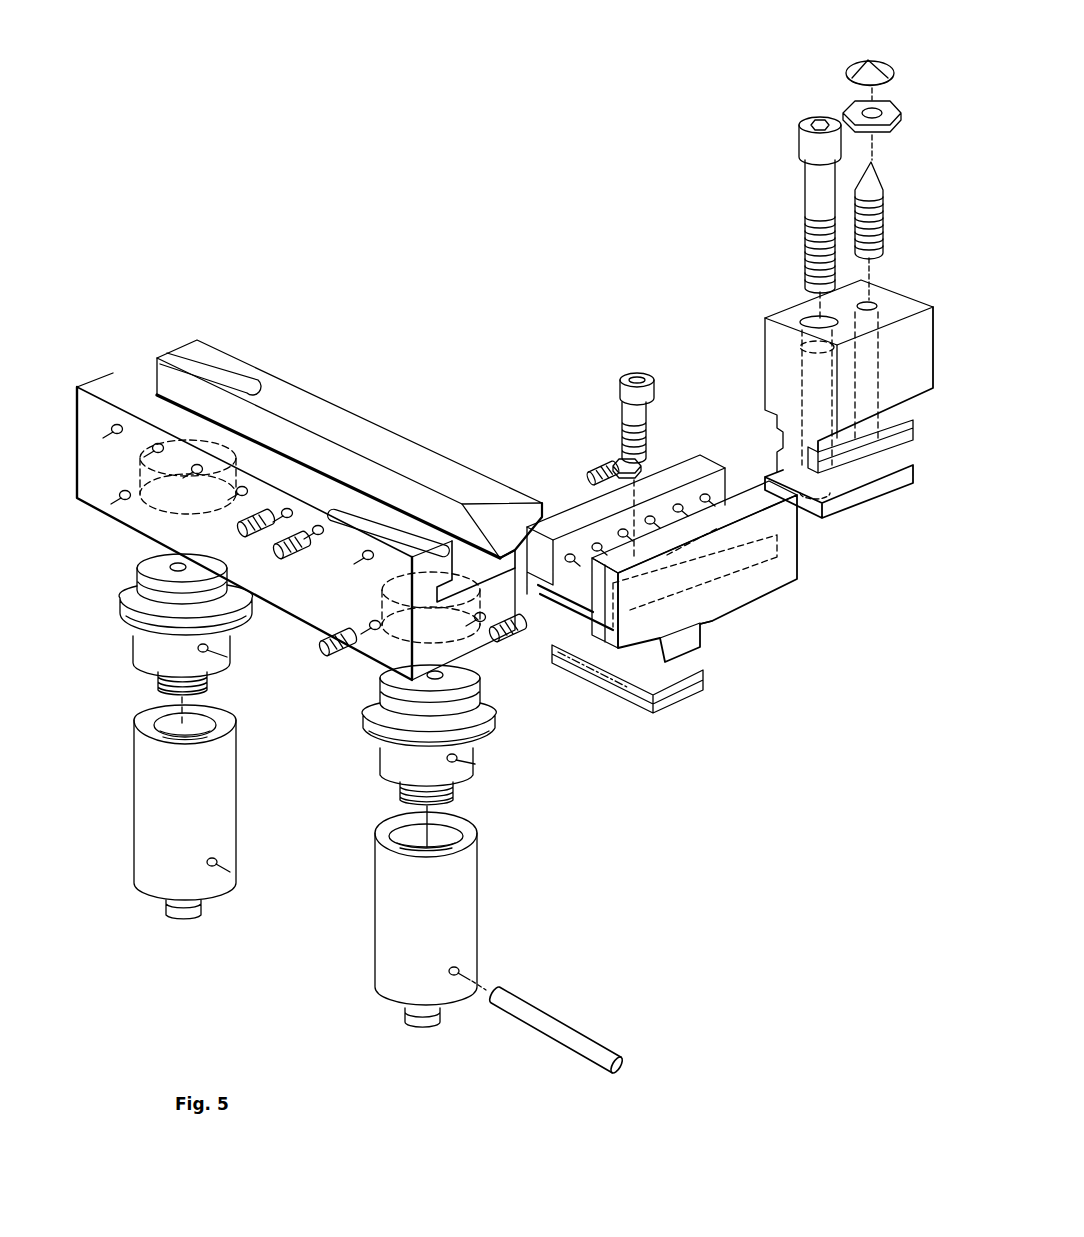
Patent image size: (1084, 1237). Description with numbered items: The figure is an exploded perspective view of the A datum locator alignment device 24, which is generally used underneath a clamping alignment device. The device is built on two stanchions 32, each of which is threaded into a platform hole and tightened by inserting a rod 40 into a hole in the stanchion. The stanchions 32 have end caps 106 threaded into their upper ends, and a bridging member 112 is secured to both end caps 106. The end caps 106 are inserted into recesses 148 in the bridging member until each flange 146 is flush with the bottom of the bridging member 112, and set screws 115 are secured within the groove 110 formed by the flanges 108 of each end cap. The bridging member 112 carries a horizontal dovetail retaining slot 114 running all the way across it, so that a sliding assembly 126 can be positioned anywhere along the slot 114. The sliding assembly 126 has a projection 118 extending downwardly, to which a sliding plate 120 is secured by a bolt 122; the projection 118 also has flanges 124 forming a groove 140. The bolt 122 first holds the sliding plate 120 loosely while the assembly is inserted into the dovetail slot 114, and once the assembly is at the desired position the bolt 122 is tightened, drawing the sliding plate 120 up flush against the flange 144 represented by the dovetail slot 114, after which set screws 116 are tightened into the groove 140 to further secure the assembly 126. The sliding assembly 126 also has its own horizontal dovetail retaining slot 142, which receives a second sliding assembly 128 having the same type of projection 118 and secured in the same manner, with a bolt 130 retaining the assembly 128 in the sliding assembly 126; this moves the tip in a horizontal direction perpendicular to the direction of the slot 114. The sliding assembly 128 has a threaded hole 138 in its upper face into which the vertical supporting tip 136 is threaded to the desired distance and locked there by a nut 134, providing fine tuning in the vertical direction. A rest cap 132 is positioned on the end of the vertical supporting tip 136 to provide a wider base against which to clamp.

The A datum locator alignment device 24 is at (430, 296).
The stanchion 32 is at (218, 817).
The rod 40 is at (537, 1010).
The end cap 106 is at (478, 757).
The flanges 108 is at (474, 698).
The groove 110 is at (388, 703).
The bridging member 112 is at (240, 363).
The horizontal dovetail retaining slot 114 is at (300, 462).
The set screws 115 is at (322, 650).
The set screws 116 is at (277, 548).
The projection 118 is at (711, 672).
The sliding plate 120 is at (680, 700).
The bolt 122 is at (628, 376).
The flanges 124 is at (662, 652).
The sliding assembly 126 is at (768, 580).
The sliding assembly 128 is at (780, 305).
The bolt 130 is at (805, 121).
The rest cap 132 is at (872, 57).
The nut 134 is at (880, 128).
The vertical supporting tip 136 is at (884, 216).
The hole 138 is at (865, 302).
The groove 140 is at (702, 640).
The horizontal dovetail retaining slot 142 is at (708, 500).
The flange 144 is at (510, 543).
The flange 146 is at (378, 733).
The recesses 148 is at (152, 450).